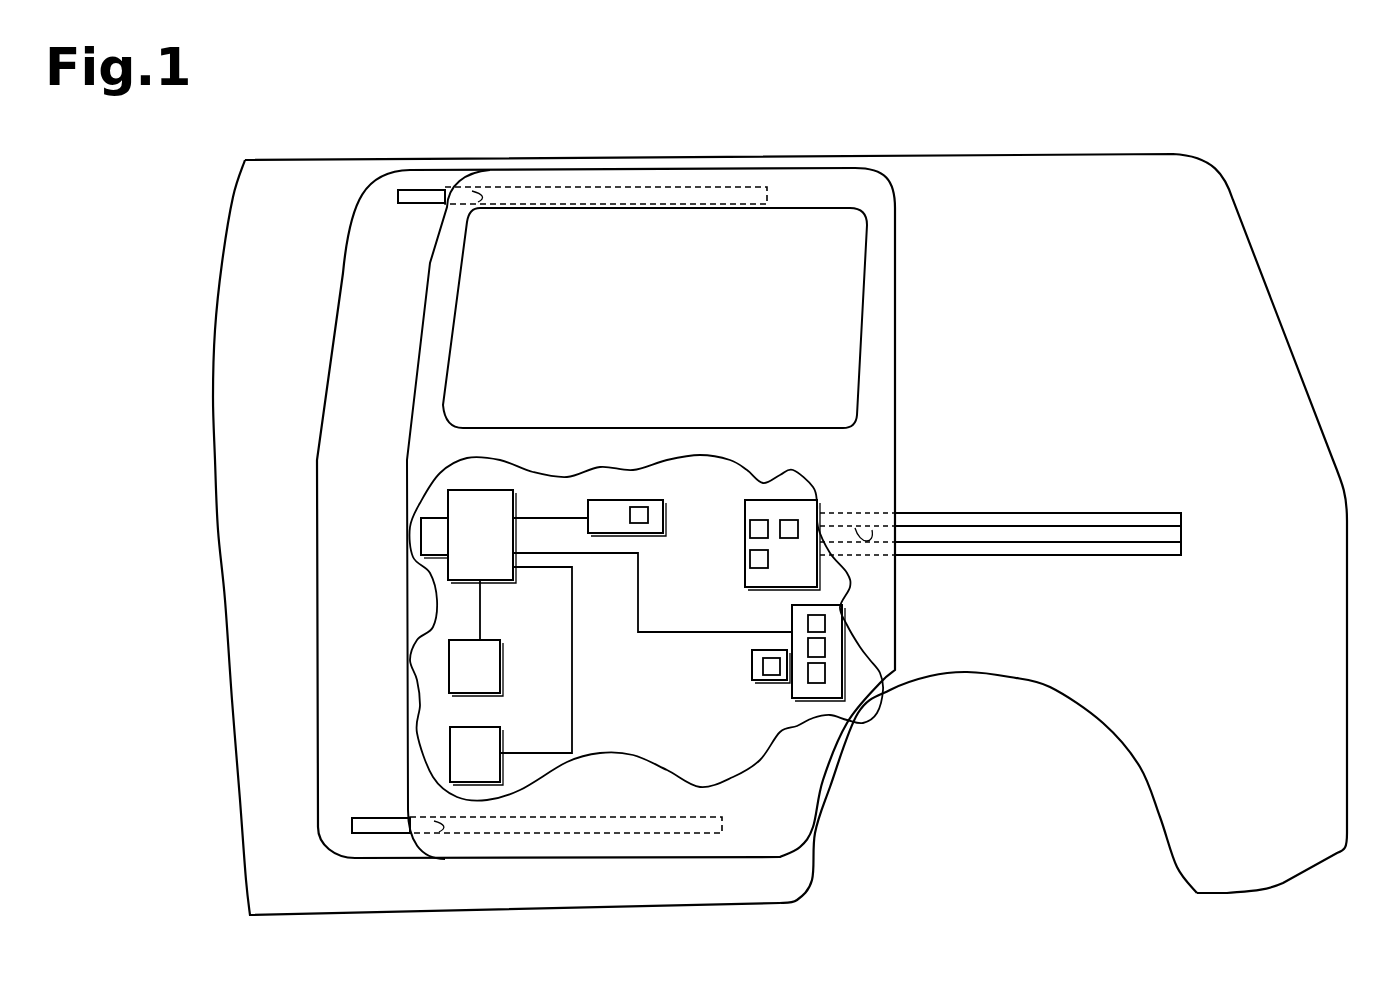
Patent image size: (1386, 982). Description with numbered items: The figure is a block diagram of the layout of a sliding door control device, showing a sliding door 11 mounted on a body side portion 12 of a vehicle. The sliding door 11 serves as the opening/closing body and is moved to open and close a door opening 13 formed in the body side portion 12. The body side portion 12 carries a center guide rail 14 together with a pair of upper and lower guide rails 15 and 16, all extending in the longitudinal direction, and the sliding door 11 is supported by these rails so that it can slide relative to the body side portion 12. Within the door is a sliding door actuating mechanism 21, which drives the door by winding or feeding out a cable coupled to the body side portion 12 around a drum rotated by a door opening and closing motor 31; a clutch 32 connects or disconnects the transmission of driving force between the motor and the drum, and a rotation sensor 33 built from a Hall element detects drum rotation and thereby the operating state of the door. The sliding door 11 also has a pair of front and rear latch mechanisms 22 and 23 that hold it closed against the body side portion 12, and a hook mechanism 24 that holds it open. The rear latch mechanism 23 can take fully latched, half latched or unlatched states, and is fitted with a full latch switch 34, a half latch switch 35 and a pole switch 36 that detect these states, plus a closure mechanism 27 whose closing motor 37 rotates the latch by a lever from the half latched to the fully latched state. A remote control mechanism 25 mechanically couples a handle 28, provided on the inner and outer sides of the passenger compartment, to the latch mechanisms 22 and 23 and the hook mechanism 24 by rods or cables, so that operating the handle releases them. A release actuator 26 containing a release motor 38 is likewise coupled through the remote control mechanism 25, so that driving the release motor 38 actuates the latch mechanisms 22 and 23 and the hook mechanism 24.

The sliding door 11 is at (880, 170).
The body side portion 12 is at (1045, 154).
The door opening 13 is at (340, 292).
The center guide rail 14 is at (1160, 557).
The upper guide rail 15 is at (423, 205).
The lower guide rail 16 is at (365, 818).
The sliding door actuating mechanism 21 is at (763, 500).
The front latch mechanism 22 is at (500, 668).
The rear latch mechanism 23 is at (810, 700).
The hook mechanism 24 is at (475, 727).
The remote control mechanism 25 is at (500, 583).
The release actuator 26 is at (630, 500).
The closure mechanism 27 is at (752, 665).
The handle 28 is at (432, 555).
The door opening and closing motor 31 is at (750, 528).
The clutch 32 is at (750, 558).
The rotation sensor 33 is at (791, 520).
The full latch switch 34 is at (825, 623).
The half latch switch 35 is at (825, 648).
The pole switch 36 is at (825, 673).
The closing motor 37 is at (770, 676).
The release motor 38 is at (638, 523).